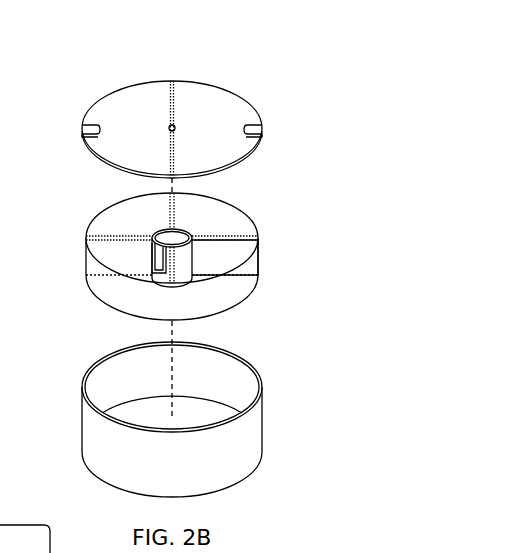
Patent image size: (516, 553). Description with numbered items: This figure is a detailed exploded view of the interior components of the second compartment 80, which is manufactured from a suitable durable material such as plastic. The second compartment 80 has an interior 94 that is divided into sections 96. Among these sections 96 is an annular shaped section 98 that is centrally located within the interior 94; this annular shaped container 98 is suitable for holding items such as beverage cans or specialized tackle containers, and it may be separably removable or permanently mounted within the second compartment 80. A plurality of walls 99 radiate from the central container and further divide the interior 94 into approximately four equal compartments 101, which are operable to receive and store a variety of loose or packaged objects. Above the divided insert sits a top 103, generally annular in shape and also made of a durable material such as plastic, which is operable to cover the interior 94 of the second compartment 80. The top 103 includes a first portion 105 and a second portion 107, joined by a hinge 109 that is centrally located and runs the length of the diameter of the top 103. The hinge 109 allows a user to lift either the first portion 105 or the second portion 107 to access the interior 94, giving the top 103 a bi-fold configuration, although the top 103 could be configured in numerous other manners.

The second compartment 80 is at (272, 418).
The interior 94 is at (275, 250).
The sections 96 is at (120, 220).
The annular shaped section 98 is at (167, 241).
The walls 99 is at (235, 235).
The equal compartments 101 is at (153, 207).
The top 103 is at (208, 95).
The first portion 105 is at (225, 110).
The second portion 107 is at (135, 108).
The hinge 109 is at (172, 82).